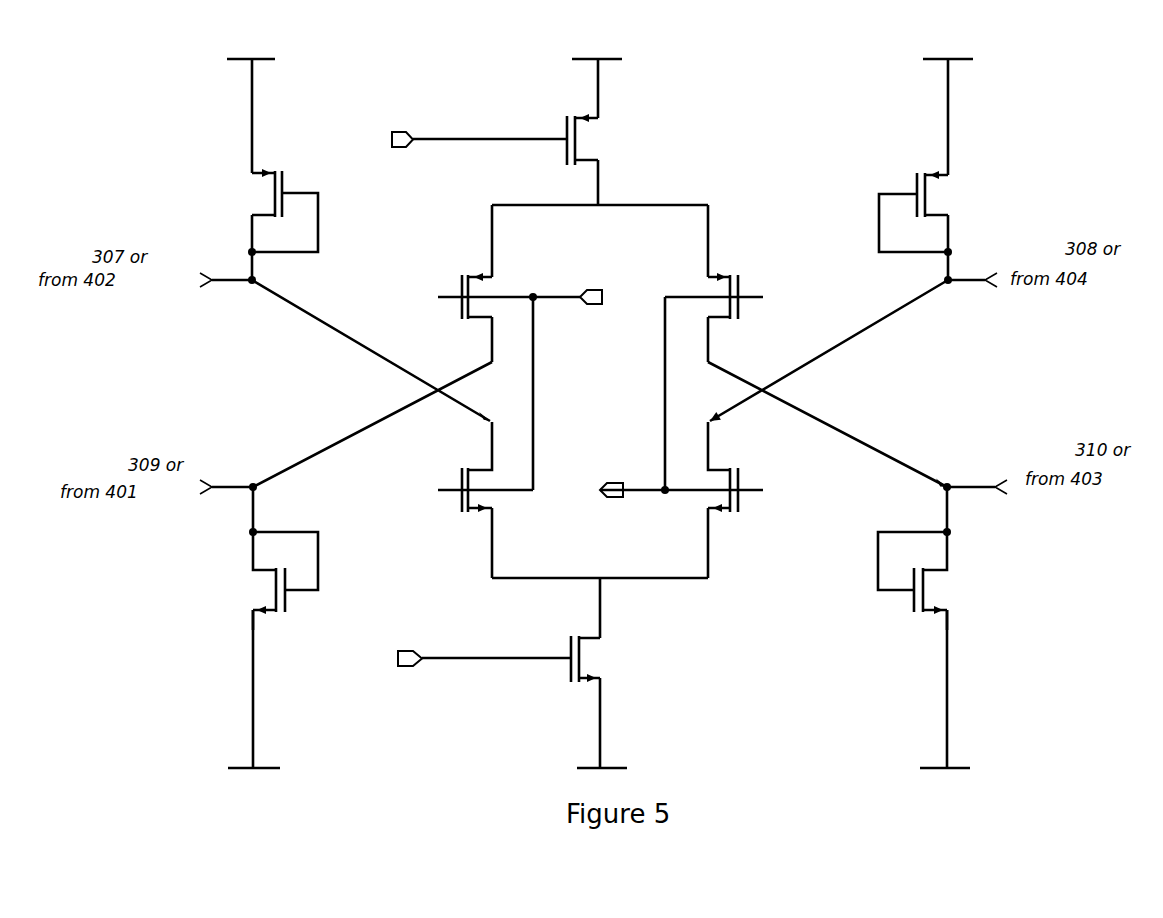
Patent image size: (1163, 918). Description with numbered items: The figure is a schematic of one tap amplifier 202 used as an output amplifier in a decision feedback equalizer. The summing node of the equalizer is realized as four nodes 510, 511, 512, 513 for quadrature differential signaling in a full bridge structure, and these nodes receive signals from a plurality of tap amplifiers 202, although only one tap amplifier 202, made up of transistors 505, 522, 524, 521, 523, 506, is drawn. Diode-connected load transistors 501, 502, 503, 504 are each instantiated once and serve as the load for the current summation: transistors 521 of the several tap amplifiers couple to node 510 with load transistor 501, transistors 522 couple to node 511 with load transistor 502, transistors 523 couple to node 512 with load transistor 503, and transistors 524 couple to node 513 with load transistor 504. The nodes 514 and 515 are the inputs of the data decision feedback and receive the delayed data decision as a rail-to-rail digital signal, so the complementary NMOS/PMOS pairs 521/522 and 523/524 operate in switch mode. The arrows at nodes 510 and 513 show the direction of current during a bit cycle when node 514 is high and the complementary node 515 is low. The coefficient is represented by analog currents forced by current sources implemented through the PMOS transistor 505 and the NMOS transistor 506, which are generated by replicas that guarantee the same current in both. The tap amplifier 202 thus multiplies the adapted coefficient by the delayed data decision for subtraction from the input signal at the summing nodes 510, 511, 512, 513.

The tap amplifier 202 is at (715, 129).
The load transistor 501 is at (258, 210).
The load transistor 502 is at (258, 572).
The load transistor 503 is at (940, 205).
The load transistor 504 is at (950, 574).
The PMOS transistor 505 is at (515, 139).
The NMOS transistor 506 is at (600, 642).
The node 510 is at (255, 279).
The node 511 is at (256, 492).
The node 512 is at (945, 281).
The node 513 is at (948, 485).
The node 514 is at (565, 378).
The node 515 is at (634, 397).
The NMOS transistor 521 is at (485, 500).
The PMOS transistor 522 is at (485, 317).
The NMOS transistor 523 is at (714, 500).
The PMOS transistor 524 is at (714, 317).